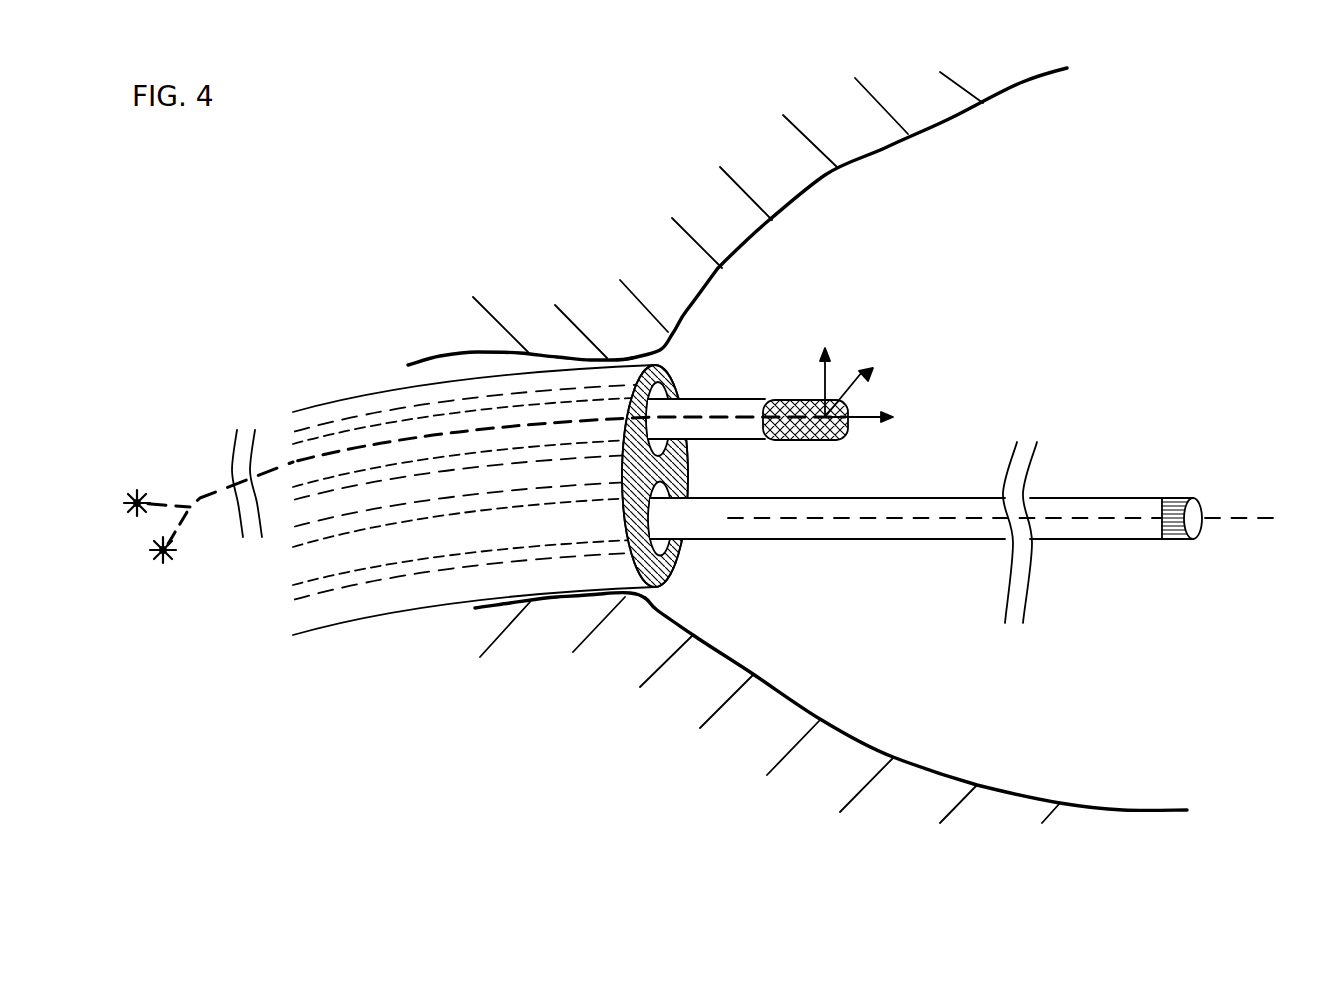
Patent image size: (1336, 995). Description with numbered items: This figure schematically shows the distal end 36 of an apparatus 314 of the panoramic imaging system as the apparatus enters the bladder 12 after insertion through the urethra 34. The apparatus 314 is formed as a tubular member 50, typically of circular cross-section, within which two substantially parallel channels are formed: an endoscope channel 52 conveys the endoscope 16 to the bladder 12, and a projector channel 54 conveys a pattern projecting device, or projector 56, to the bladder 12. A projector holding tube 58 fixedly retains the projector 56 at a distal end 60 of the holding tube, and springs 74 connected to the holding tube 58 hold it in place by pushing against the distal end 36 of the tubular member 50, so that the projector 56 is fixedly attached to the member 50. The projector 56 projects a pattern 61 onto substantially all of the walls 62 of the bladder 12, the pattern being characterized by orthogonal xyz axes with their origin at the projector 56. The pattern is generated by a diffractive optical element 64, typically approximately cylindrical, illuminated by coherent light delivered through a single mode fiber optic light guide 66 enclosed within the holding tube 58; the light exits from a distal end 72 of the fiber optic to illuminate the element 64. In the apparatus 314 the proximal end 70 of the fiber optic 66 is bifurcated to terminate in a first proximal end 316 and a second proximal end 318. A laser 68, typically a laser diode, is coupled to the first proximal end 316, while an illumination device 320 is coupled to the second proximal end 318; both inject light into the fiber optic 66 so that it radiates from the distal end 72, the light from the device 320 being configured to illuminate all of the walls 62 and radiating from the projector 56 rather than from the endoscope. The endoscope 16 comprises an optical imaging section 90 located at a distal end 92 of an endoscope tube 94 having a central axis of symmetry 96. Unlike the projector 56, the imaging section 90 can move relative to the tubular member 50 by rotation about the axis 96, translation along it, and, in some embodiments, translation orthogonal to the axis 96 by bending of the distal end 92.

The bladder 12 is at (1026, 278).
The endoscope 16 is at (385, 563).
The urethra 34 is at (417, 363).
The distal end 36 is at (681, 469).
The tubular member 50 is at (428, 588).
The endoscope channel 52 is at (587, 560).
The projector channel 54 is at (537, 390).
The projector 56 is at (792, 400).
The projector holding tube 58 is at (698, 399).
The distal end of holding tube 60 is at (775, 400).
The pattern 61 is at (980, 100).
The walls 62 is at (892, 147).
The diffractive optical element 64 is at (850, 410).
The fiber optic light guide 66 is at (319, 457).
The laser 68 is at (137, 497).
The proximal end of fiber optic 70 is at (216, 531).
The distal end of fiber optic 72 is at (805, 420).
The springs 74 is at (672, 398).
The optical imaging section 90 is at (1188, 453).
The distal end of endoscope tube 92 is at (1163, 500).
The endoscope tube 94 is at (946, 540).
The central axis of symmetry 96 is at (1240, 520).
The apparatus 314 is at (328, 628).
The first proximal end 316 is at (152, 497).
The second proximal end 318 is at (163, 548).
The illumination device 320 is at (163, 556).